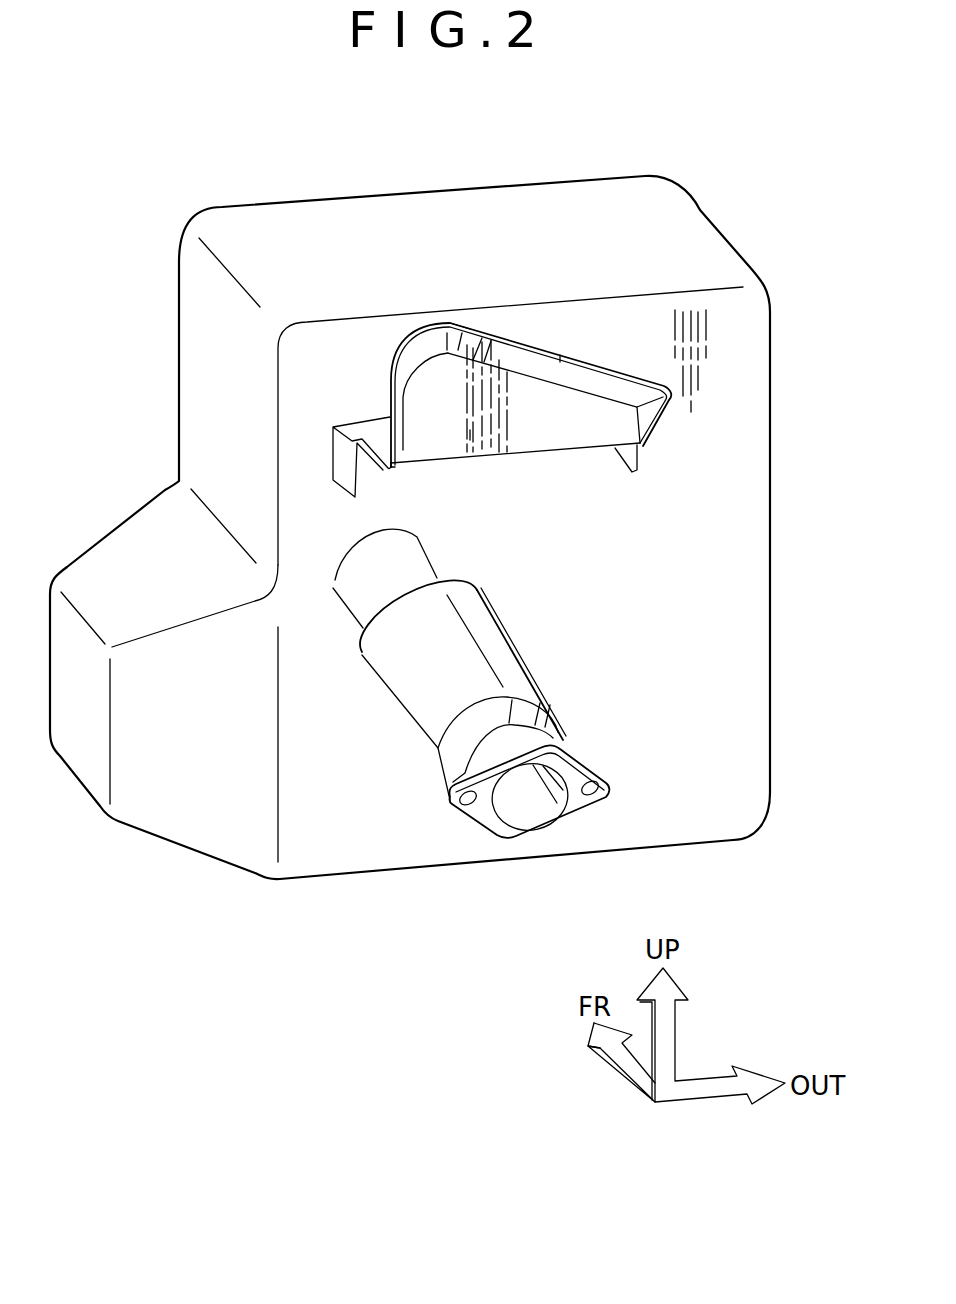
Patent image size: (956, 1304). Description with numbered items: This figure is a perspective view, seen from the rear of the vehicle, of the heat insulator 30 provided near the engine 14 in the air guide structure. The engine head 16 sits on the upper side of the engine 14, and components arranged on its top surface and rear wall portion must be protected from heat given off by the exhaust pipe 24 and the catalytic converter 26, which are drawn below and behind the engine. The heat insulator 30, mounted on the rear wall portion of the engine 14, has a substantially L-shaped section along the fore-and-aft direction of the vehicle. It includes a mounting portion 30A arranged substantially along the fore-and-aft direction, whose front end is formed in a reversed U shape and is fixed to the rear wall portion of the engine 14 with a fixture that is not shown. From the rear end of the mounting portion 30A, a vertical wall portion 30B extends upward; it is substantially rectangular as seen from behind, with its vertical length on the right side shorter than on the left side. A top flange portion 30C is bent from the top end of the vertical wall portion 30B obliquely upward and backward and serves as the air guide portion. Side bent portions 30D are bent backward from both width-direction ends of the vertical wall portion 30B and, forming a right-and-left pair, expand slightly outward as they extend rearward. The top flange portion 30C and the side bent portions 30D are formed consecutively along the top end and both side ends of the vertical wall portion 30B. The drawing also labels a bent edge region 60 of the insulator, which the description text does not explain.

The engine 14 is at (731, 723).
The engine head 16 is at (708, 363).
The exhaust pipe 24 is at (417, 565).
The catalytic converter 26 is at (513, 645).
The heat insulator 30 is at (534, 417).
The mounting portion 30A is at (373, 430).
The vertical wall portion 30B is at (572, 427).
The top flange portion 30C is at (545, 368).
The side bent portions 30D is at (400, 425).
The bent edge portion 60 is at (520, 337).